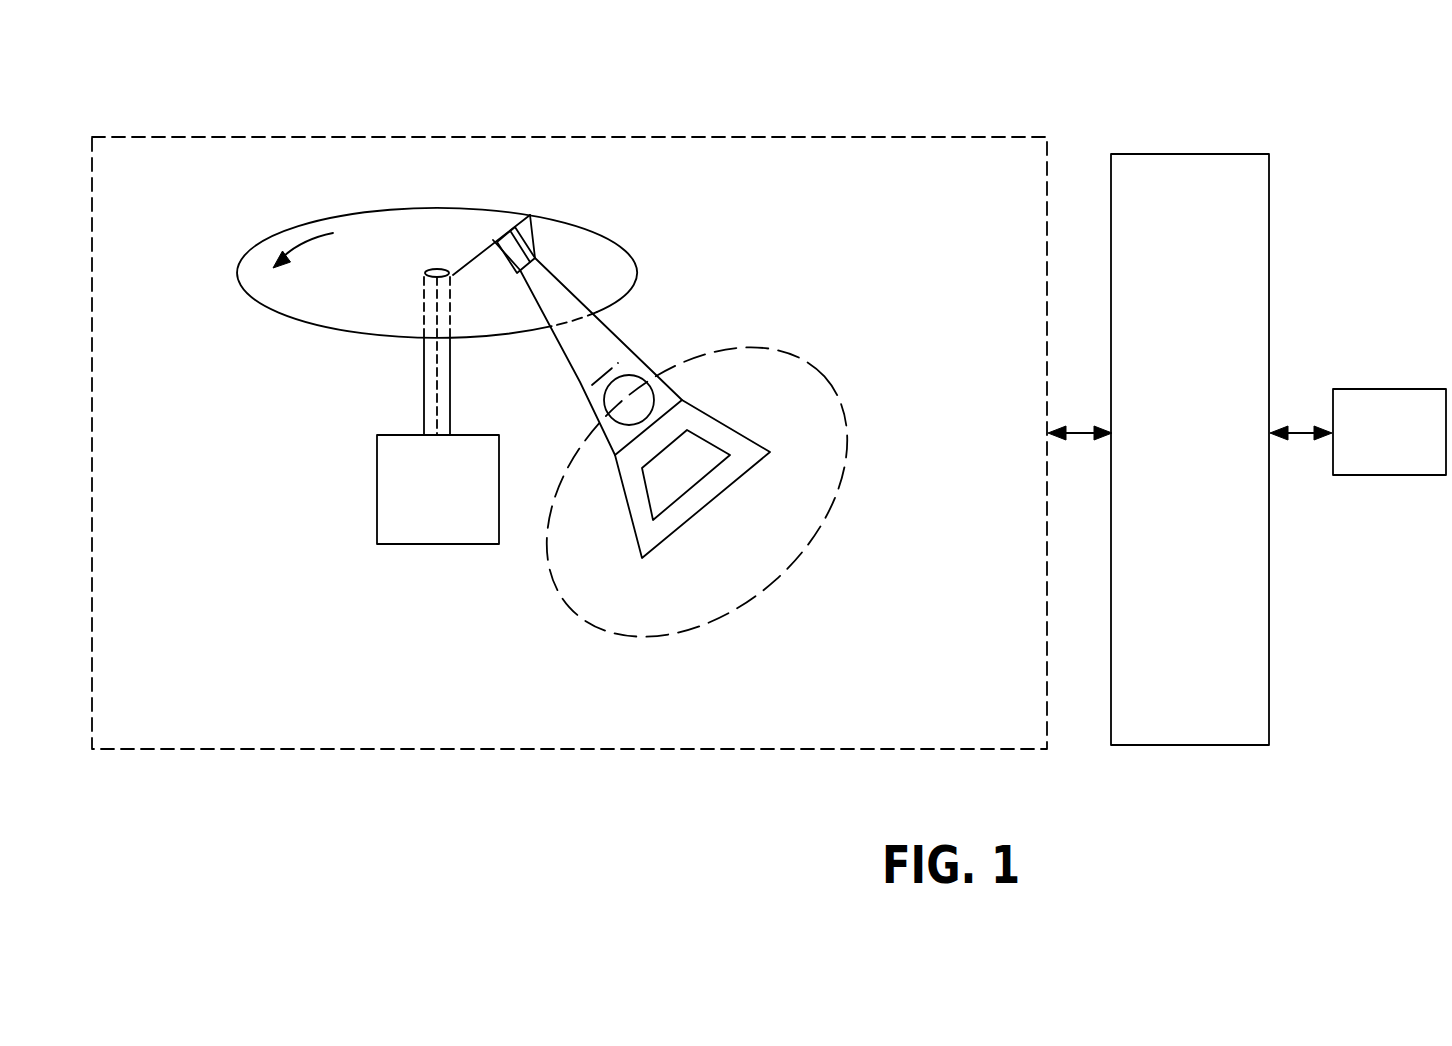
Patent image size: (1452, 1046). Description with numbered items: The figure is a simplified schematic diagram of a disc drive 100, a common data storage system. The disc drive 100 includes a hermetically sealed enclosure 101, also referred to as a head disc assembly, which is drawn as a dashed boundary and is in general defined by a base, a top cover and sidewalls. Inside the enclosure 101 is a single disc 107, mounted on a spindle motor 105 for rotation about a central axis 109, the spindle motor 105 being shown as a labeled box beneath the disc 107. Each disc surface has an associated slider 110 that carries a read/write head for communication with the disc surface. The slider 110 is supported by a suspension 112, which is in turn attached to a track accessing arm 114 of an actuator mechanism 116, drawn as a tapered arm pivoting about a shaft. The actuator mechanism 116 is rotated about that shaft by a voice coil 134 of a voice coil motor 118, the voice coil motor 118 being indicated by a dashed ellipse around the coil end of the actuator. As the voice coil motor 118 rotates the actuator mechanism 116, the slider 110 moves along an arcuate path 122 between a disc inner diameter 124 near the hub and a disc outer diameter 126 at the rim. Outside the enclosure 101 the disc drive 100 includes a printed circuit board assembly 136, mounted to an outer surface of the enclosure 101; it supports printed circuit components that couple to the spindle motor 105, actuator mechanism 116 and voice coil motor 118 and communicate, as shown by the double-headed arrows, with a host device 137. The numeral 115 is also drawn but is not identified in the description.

The disc drive 100 is at (1232, 83).
The hermetically sealed enclosure 101 is at (670, 750).
The spindle motor 105 is at (377, 522).
The disc 107 is at (260, 283).
The central axis 109 is at (437, 353).
The slider 110 is at (519, 253).
The suspension 112 is at (552, 298).
The track accessing arm 114 is at (593, 348).
The suspension 115 is at (507, 243).
The actuator mechanism 116 is at (594, 393).
The voice coil motor 118 is at (640, 628).
The arcuate path 122 is at (466, 263).
The disc inner diameter 124 is at (426, 272).
The disc outer diameter 126 is at (585, 228).
The voice coil 134 is at (643, 520).
The printed circuit board assembly 136 is at (1269, 212).
The host device 137 is at (1358, 475).